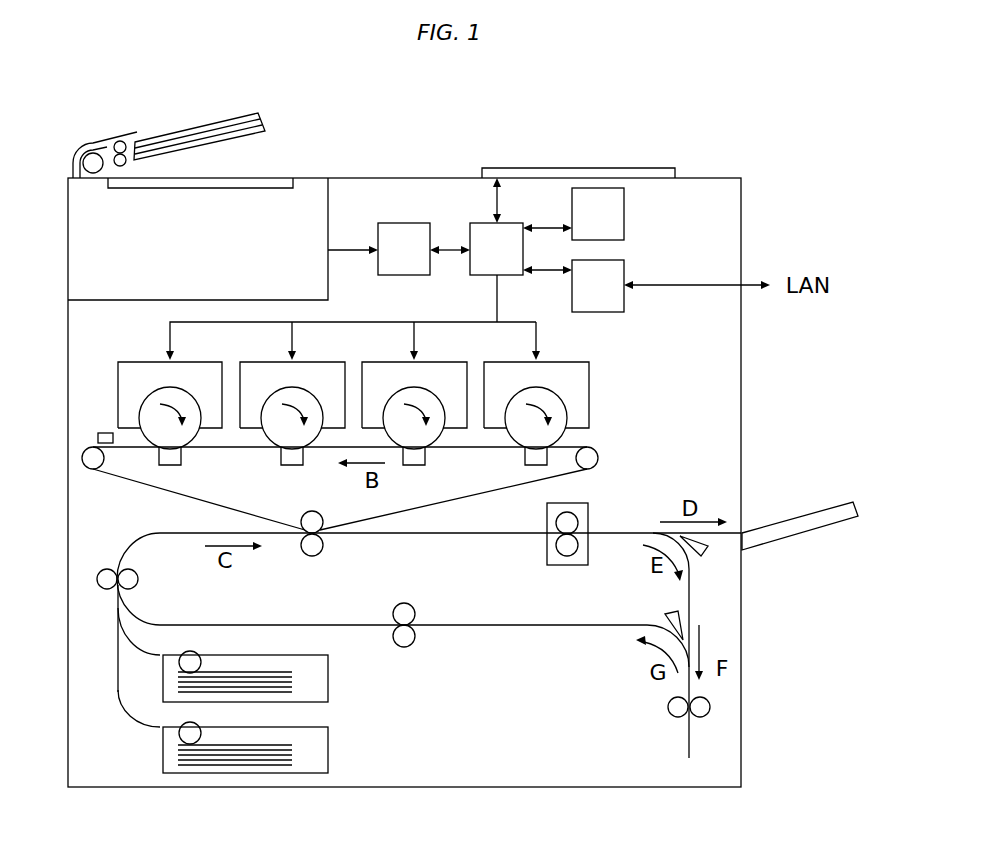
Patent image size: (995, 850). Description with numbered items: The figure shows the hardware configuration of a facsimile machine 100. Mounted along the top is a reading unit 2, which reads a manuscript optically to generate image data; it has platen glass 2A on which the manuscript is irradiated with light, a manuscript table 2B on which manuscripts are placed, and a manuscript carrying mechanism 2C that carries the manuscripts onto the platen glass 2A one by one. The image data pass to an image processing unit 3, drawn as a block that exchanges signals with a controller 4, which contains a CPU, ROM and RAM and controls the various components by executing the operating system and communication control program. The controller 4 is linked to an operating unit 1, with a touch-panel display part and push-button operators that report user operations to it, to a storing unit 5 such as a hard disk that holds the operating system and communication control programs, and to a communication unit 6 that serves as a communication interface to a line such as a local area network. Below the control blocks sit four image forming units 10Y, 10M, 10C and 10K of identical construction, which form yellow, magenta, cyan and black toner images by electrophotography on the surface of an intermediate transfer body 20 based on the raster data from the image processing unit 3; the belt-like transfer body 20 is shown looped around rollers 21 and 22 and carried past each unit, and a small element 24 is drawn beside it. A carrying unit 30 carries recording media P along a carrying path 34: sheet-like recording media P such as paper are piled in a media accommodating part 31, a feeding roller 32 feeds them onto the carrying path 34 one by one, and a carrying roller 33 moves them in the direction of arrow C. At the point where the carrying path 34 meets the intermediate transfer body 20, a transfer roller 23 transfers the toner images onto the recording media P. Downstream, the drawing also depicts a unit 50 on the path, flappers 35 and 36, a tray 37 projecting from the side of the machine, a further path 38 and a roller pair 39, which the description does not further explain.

The facsimile machine 100 is at (744, 159).
The operating unit 1 is at (593, 168).
The reading unit 2 is at (318, 178).
The platen glass 2A is at (252, 180).
The manuscript table 2B is at (268, 125).
The manuscript carrying mechanism 2C is at (128, 132).
The image processing unit 3 is at (392, 223).
The controller 4 is at (510, 223).
The storing unit 5 is at (625, 207).
The communication unit 6 is at (625, 270).
The image forming unit 10K is at (190, 362).
The image forming unit 10C is at (312, 362).
The image forming unit 10M is at (434, 362).
The image forming unit 10Y is at (556, 362).
The intermediate transfer body 20 is at (176, 498).
The tension roller 21 is at (93, 469).
The support roller 22 is at (598, 458).
The transfer roller 23 is at (323, 548).
The sensor 24 is at (108, 432).
The carrying unit 30 is at (118, 550).
The media accommodating part 31 is at (250, 655).
The feeding roller 32 is at (197, 652).
The carrying roller 33 is at (105, 590).
The carrying path 34 is at (445, 533).
The switching flapper 35 is at (706, 552).
The switching flapper 36 is at (668, 616).
The discharge tray 37 is at (790, 520).
The reverse conveyance path 38 is at (686, 744).
The reverse roller pair 39 is at (706, 712).
The fixing unit 50 is at (590, 512).
The recording media P is at (292, 680).